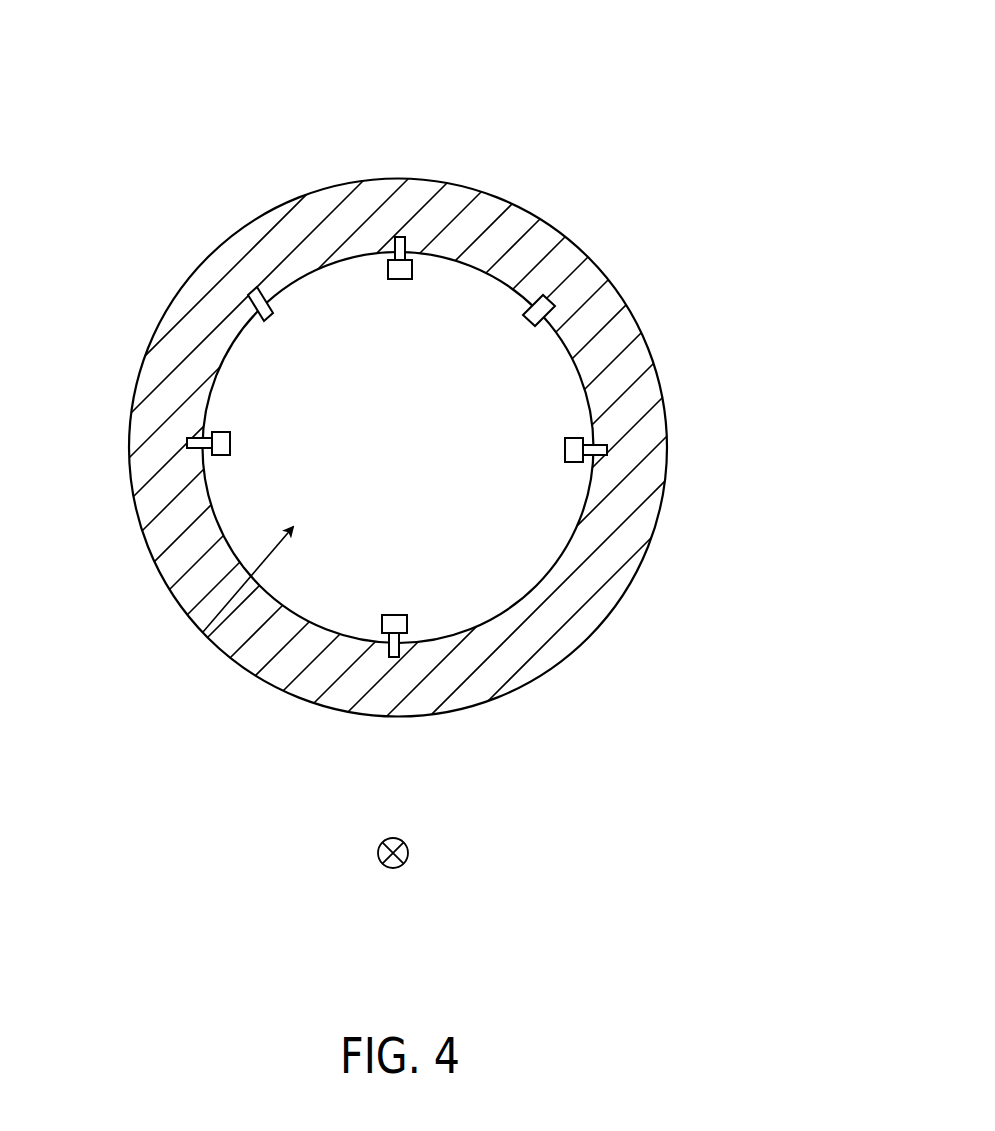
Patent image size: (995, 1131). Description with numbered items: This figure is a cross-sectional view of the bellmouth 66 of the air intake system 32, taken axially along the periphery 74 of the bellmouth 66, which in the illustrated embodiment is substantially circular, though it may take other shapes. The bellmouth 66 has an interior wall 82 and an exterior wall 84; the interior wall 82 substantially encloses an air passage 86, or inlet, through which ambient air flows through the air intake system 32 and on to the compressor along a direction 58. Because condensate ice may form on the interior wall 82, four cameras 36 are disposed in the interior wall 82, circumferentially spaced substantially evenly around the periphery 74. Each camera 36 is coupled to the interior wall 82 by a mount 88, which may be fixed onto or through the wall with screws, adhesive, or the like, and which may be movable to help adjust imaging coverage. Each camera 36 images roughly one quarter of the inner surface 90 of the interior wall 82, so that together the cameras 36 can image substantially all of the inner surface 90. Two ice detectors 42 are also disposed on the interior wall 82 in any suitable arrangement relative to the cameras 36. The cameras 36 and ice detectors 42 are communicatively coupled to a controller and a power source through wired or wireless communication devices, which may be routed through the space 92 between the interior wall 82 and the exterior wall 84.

The air intake system 32 is at (503, 80).
The cameras 36 is at (396, 280).
The ice detectors 42 is at (272, 305).
The direction 58 is at (408, 853).
The bellmouth 66 is at (743, 483).
The periphery 74 is at (227, 548).
The interior wall 82 is at (533, 588).
The exterior wall 84 is at (518, 690).
The air passage 86 is at (203, 632).
The mount 88 is at (400, 237).
The inner surface 90 is at (562, 545).
The space 92 is at (462, 695).